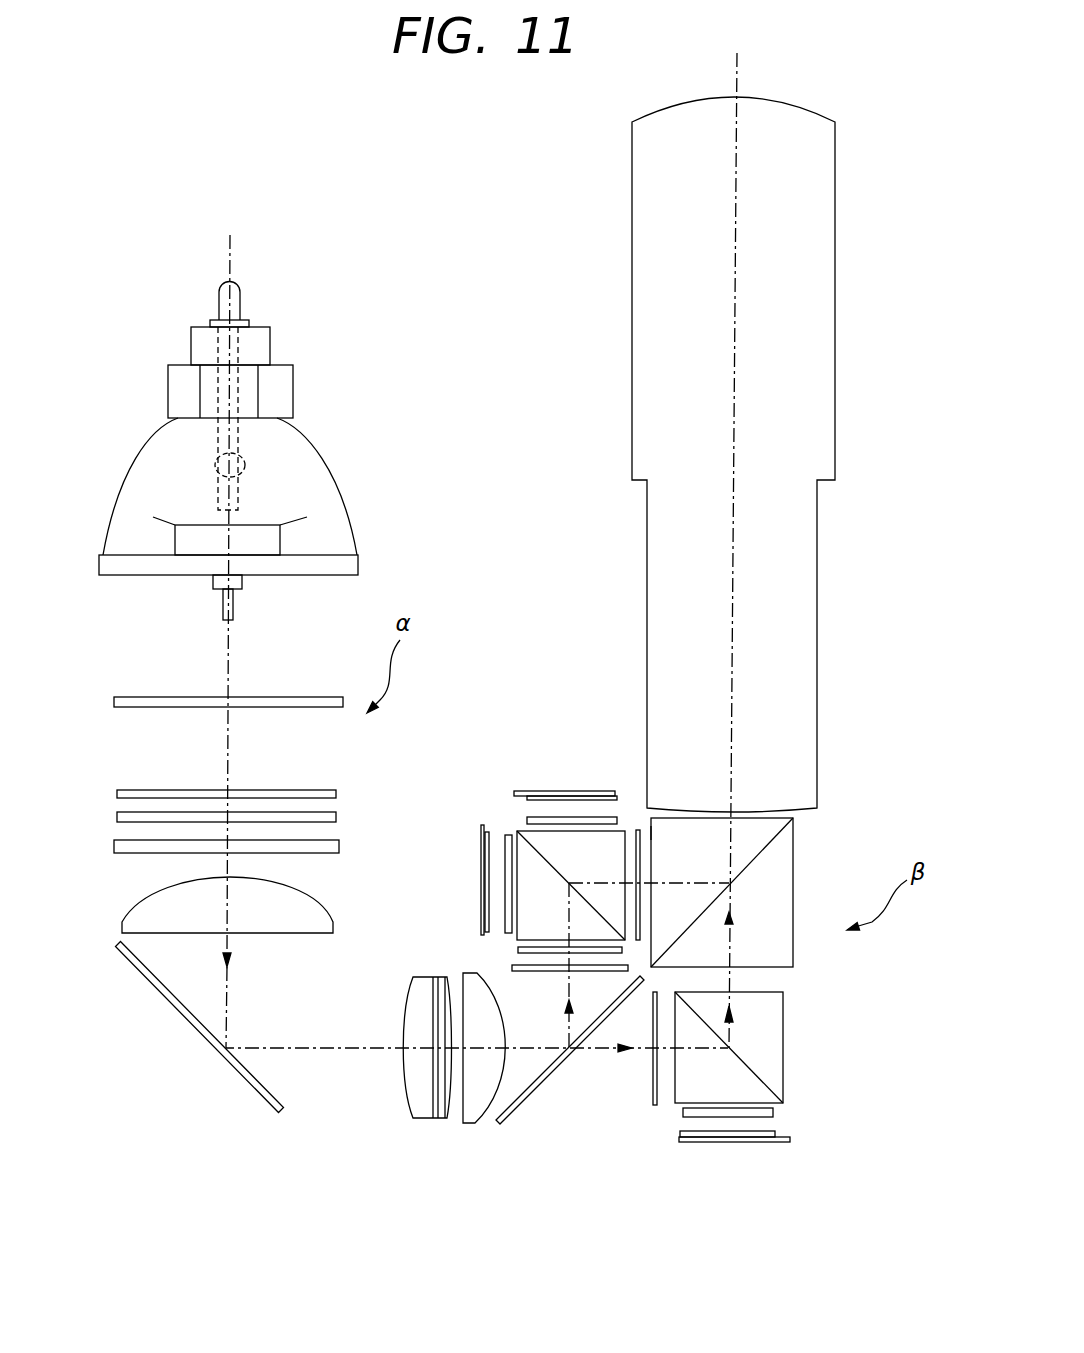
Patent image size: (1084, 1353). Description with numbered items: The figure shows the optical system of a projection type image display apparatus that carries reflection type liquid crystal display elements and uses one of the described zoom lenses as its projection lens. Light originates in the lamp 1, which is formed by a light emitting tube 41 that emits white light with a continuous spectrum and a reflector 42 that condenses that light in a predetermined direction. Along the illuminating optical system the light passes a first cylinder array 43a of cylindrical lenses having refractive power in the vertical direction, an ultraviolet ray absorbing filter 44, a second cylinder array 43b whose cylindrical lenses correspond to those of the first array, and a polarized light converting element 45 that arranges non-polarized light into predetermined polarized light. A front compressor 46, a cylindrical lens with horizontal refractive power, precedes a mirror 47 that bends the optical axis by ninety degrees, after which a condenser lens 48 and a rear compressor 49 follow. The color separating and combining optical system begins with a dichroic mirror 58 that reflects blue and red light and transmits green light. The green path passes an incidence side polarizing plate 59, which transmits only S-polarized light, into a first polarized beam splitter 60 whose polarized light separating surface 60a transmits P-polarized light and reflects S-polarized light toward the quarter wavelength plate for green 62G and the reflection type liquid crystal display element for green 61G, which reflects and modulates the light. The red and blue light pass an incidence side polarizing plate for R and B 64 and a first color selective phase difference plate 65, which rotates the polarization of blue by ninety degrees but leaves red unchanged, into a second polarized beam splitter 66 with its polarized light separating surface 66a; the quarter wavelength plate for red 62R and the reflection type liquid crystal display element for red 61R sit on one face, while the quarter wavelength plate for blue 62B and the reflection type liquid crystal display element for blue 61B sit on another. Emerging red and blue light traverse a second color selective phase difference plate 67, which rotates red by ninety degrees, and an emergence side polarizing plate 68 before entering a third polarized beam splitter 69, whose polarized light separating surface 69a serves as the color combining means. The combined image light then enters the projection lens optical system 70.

The lamp 1 is at (340, 425).
The light emitting tube 41 is at (213, 463).
The reflector 42 is at (348, 510).
The first cylinder array 43a is at (137, 697).
The second cylinder array 43b is at (120, 820).
The ultraviolet ray absorbing filter 44 is at (137, 790).
The polarized light converting element 45 is at (114, 846).
The front compressor 46 is at (122, 928).
The mirror 47 is at (155, 985).
The condenser lens 48 is at (418, 1118).
The rear compressor 49 is at (473, 1122).
The dichroic mirror 58 is at (513, 1115).
The incidence side polarizing plate 59 is at (652, 1105).
The first polarized beam splitter 60 is at (778, 1075).
The polarized light separating surface 60a is at (740, 1050).
The reflection type liquid crystal display element for green 61G is at (745, 1143).
The reflection type liquid crystal display element for red 61R is at (480, 848).
The reflection type liquid crystal display element for blue 61B is at (543, 790).
The quarter wavelength plate for green 62G is at (775, 1112).
The quarter wavelength plate for red 62R is at (507, 838).
The quarter wavelength plate for blue 62B is at (527, 817).
The incidence side polarizing plate for R and B 64 is at (512, 967).
The first color selective phase difference plate 65 is at (518, 948).
The second polarized beam splitter 66 is at (517, 829).
The polarized light separating surface 66a is at (550, 862).
The second color selective phase difference plate 67 is at (637, 830).
The emergence side polarizing plate for R and B 68 is at (643, 828).
The third polarized beam splitter 69 is at (787, 842).
The polarized light separating surface 69a is at (740, 877).
The projection lens optical system 70 is at (827, 165).